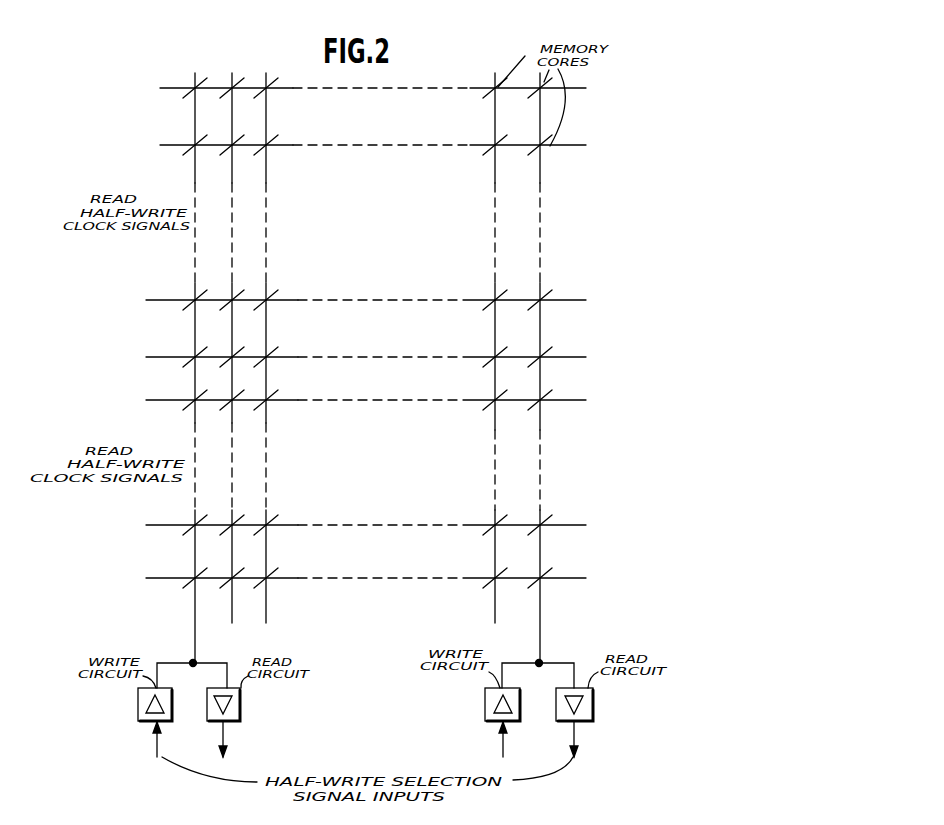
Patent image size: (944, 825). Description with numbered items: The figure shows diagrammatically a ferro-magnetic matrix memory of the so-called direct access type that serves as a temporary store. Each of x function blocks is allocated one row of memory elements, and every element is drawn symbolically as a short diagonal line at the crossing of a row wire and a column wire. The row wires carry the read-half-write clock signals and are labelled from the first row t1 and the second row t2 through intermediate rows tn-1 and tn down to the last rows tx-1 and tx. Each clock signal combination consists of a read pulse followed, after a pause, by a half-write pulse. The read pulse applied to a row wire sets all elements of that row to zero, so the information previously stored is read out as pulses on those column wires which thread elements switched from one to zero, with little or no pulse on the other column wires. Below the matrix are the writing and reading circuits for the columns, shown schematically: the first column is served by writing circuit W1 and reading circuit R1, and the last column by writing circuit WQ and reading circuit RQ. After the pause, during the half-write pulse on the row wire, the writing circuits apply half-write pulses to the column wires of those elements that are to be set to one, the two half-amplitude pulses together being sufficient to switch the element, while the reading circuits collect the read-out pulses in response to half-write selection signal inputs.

The read half-write clock signal line t1 is at (98, 178).
The read half-write clock signal line t2 is at (115, 182).
The read half-write clock signal line tn-1 is at (95, 241).
The read half-write clock signal line tn is at (87, 252).
The read half-write clock signal line tx-1 is at (92, 488).
The read half-write clock signal line tx is at (78, 490).
The writing circuit W1 is at (138, 722).
The reading circuit R1 is at (238, 722).
The writing circuit WQ is at (480, 722).
The reading circuit RQ is at (593, 722).